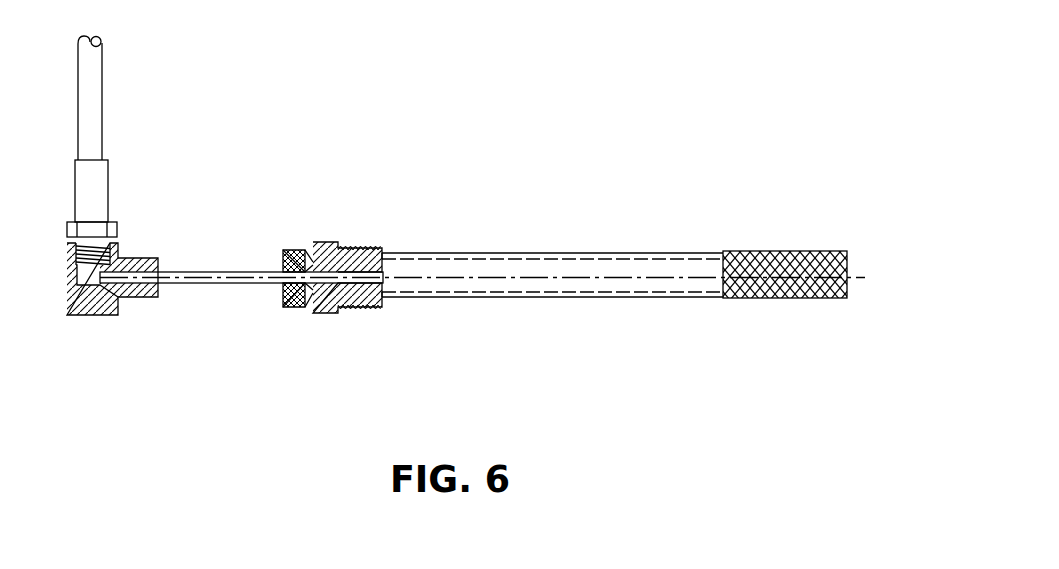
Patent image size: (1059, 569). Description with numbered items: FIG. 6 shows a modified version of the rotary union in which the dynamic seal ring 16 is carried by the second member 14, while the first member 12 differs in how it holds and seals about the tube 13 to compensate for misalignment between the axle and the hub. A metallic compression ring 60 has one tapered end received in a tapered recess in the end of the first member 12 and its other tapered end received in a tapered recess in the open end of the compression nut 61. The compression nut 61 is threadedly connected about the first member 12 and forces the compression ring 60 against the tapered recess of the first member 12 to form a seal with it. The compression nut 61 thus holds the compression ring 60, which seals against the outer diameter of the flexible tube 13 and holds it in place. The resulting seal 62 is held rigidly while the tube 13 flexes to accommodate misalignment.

The first member 12 is at (367, 307).
The tube 13 is at (193, 284).
The second member 14 is at (68, 250).
The dynamic seal ring 16 is at (68, 302).
The compression ring 60 is at (307, 251).
The compression nut 61 is at (285, 252).
The seal 62 is at (287, 302).